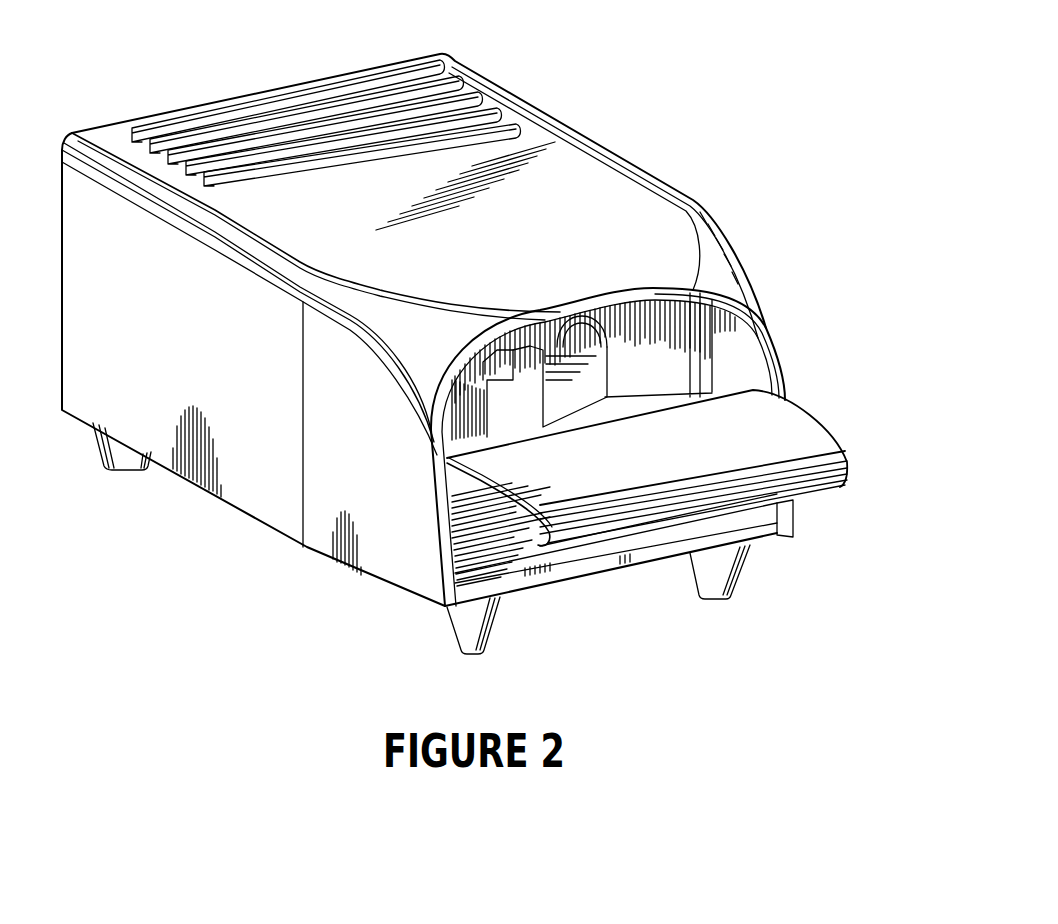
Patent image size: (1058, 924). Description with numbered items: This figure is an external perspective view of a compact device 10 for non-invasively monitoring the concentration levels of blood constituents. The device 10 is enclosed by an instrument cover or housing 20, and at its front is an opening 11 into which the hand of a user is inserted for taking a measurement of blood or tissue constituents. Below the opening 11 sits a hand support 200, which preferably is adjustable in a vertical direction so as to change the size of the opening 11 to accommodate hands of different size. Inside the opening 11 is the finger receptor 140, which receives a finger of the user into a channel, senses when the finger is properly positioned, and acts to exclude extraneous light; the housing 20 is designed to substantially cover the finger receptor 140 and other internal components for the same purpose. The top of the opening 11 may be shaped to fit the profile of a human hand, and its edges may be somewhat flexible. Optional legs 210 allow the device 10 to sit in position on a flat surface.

The device 10 is at (607, 110).
The opening 11 is at (668, 370).
The instrument cover or housing 20 is at (477, 92).
The finger receptor 140 is at (502, 415).
The hand support 200 is at (774, 424).
The legs 210 is at (127, 470).